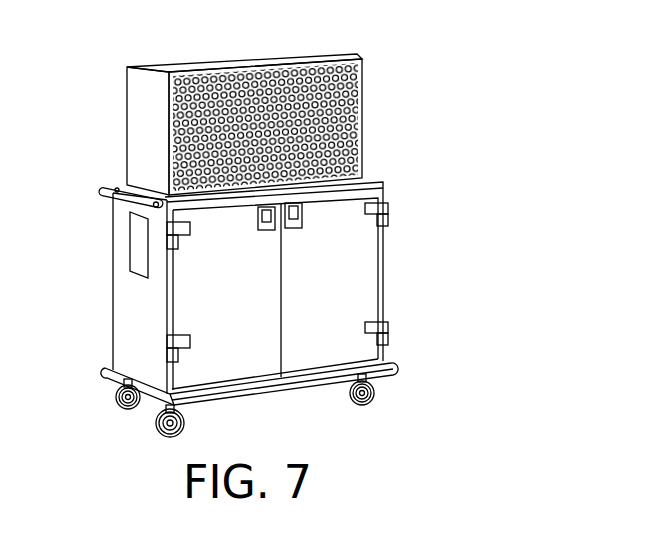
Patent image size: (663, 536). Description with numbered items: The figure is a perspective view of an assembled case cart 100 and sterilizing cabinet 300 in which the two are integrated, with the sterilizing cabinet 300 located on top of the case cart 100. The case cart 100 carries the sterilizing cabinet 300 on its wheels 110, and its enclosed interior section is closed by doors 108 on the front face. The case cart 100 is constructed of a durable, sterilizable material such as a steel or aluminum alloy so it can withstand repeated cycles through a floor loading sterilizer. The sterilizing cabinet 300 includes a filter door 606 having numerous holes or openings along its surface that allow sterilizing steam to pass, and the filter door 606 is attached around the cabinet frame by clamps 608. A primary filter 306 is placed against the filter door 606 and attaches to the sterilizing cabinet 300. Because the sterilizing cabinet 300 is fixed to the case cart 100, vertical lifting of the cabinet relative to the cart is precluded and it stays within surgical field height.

The case cart 100 is at (294, 407).
The doors 108 is at (262, 289).
The wheels 110 is at (147, 423).
The sterilizing cabinet 300 is at (125, 111).
The primary filter 306 is at (169, 84).
The filter door 606 is at (287, 101).
The clamps 608 is at (345, 112).